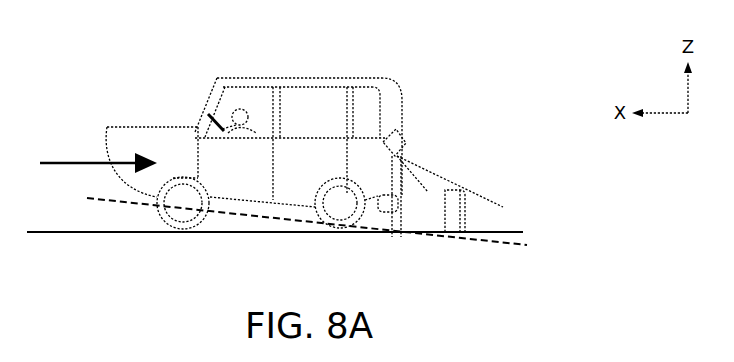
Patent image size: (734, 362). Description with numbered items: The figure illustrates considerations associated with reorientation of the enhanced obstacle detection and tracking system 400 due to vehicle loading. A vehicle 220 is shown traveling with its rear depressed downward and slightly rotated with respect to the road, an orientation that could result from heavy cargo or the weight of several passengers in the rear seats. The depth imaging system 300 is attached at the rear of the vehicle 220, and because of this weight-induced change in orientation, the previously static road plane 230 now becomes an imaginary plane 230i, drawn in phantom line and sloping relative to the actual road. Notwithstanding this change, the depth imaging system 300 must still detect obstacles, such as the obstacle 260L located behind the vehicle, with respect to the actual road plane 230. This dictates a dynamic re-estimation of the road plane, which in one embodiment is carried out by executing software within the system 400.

The vehicle 220 is at (140, 125).
The road plane 230 is at (87, 228).
The imaginary plane 230i is at (479, 243).
The obstacle 260L is at (463, 191).
The depth imaging system 300 is at (400, 132).
The enhanced obstacle detection and tracking system 400 is at (444, 59).